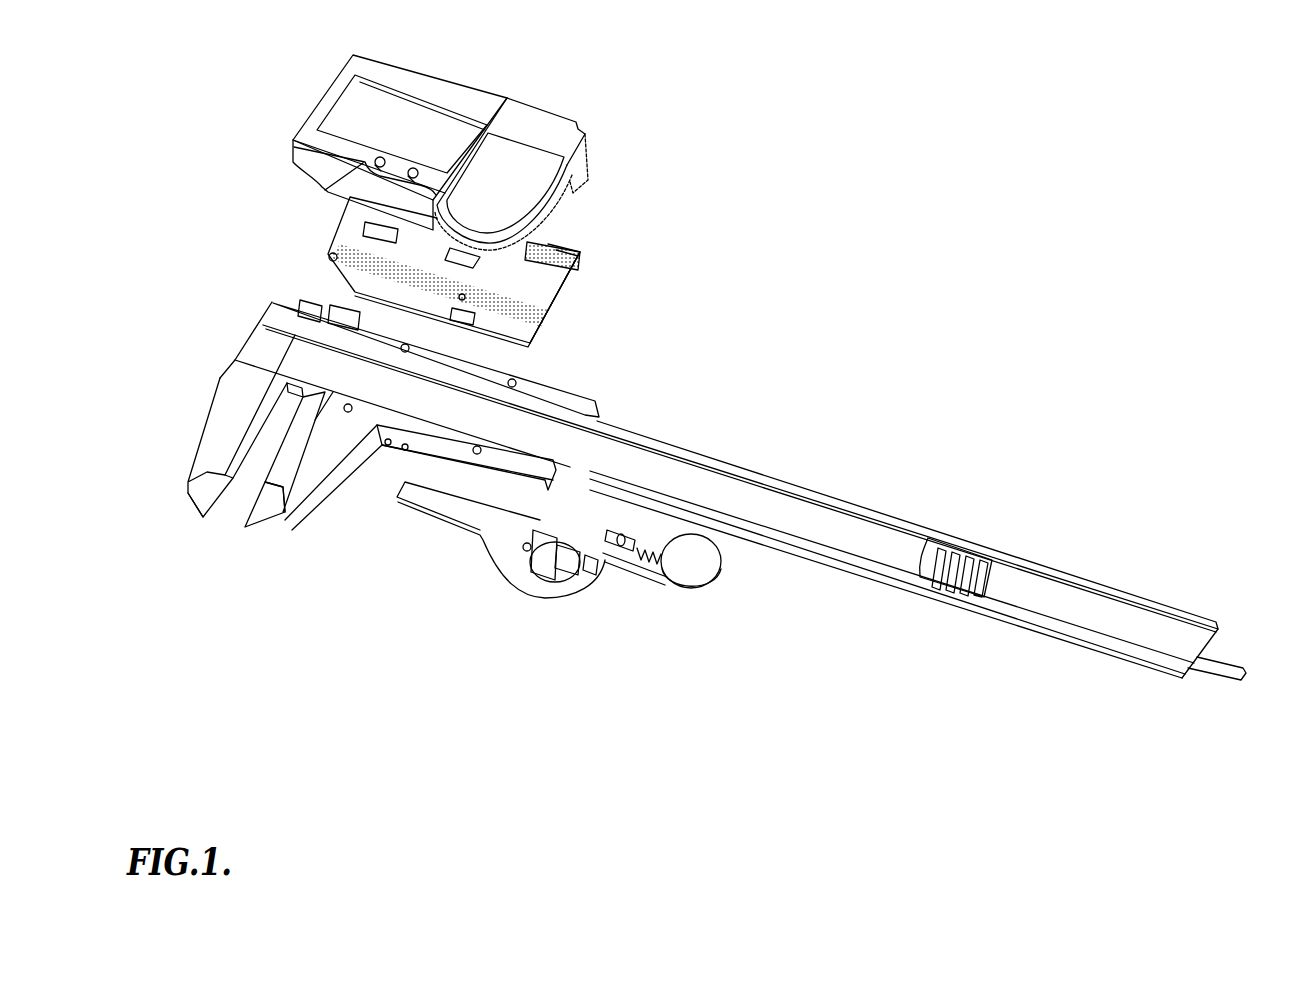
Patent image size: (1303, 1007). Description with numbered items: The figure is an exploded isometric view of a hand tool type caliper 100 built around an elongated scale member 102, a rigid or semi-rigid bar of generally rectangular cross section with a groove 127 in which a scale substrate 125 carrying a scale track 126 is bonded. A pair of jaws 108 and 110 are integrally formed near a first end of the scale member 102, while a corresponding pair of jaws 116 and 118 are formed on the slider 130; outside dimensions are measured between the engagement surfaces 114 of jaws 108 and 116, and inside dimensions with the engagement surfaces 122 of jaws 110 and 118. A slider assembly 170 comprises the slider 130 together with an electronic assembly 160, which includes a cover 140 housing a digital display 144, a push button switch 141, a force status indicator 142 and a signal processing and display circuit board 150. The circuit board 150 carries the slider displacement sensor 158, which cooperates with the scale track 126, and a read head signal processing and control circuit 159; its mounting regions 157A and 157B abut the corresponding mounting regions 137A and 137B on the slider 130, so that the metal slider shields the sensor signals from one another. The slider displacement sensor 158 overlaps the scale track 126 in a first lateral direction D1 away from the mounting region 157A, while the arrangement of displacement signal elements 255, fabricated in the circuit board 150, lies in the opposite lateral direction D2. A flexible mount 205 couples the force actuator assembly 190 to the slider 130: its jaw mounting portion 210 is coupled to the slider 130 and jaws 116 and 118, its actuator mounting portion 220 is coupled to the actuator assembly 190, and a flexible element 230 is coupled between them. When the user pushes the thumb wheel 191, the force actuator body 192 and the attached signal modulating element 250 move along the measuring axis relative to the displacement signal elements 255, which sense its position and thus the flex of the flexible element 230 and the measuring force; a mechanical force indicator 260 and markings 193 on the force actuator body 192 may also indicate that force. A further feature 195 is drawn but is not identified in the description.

The caliper 100 is at (1007, 108).
The scale member 102 is at (1220, 636).
The jaw 108 is at (215, 452).
The jaw 110 is at (404, 427).
The engagement surfaces 114 is at (236, 478).
The jaw 116 is at (295, 486).
The jaw 118 is at (350, 300).
The engagement surfaces 122 is at (315, 303).
The scale substrate 125 is at (928, 538).
The scale track 126 is at (991, 588).
The groove 127 is at (1118, 631).
The slider 130 is at (748, 502).
The mounting region 137A is at (597, 450).
The mounting region 137B is at (637, 416).
The cover 140 is at (418, 146).
The push button switch 141 is at (408, 178).
The force status indicator 142 is at (297, 151).
The digital display 144 is at (473, 92).
The signal processing and display circuit board 150 is at (488, 282).
The mounting region 157A is at (560, 318).
The mounting region 157B is at (582, 270).
The slider displacement sensor 158 is at (474, 267).
The read head signal processing and control circuit 159 is at (398, 236).
The electronic assembly 160 is at (585, 372).
The slider assembly 170 is at (645, 402).
The force actuator assembly 190 is at (687, 596).
The thumb wheel 191 is at (726, 580).
The force actuator body 192 is at (647, 575).
The markings 193 is at (663, 541).
The actuator path 195 is at (560, 477).
The flexible mount 205 is at (545, 583).
The jaw mounting portion 210 is at (530, 587).
The actuator mounting portion 220 is at (598, 534).
The flexible element 230 is at (581, 569).
The signal modulating element 250 is at (549, 522).
The arrangement of displacement signal elements 255 is at (465, 323).
The mechanical force indicator 260 is at (578, 543).
The first lateral direction D1 is at (578, 298).
The opposite lateral direction D2 is at (546, 349).